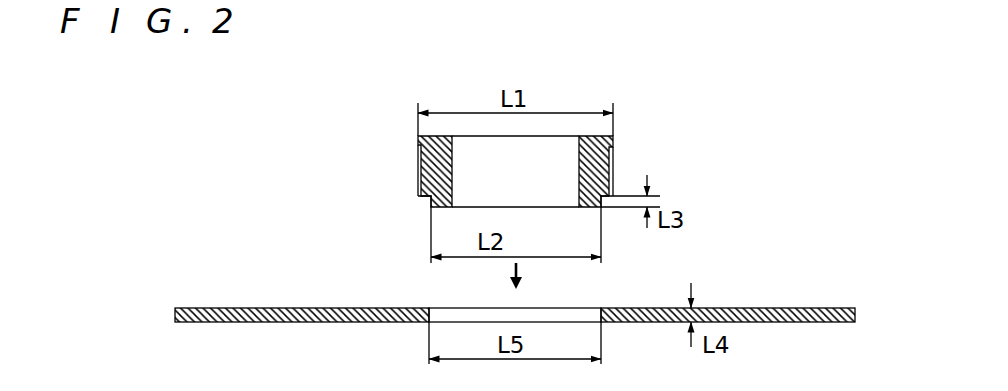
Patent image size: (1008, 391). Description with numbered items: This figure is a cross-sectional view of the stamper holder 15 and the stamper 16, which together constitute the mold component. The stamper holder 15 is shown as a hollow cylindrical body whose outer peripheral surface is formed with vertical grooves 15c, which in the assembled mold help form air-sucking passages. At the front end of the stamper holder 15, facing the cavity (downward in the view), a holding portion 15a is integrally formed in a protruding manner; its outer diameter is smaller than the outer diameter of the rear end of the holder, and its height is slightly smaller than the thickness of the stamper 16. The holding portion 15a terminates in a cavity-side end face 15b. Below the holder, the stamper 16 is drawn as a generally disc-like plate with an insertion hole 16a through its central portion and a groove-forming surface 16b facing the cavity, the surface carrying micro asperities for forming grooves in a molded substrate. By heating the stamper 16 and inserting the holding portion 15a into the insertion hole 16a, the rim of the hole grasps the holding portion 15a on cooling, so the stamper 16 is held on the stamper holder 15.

The stamper holder 15 is at (575, 98).
The holding portion 15a is at (428, 198).
The cavity-side end face 15b is at (589, 210).
The vertical groove 15c is at (416, 159).
The stamper 16 is at (515, 309).
The insertion hole 16a is at (472, 304).
The groove-forming surface 16b is at (776, 326).